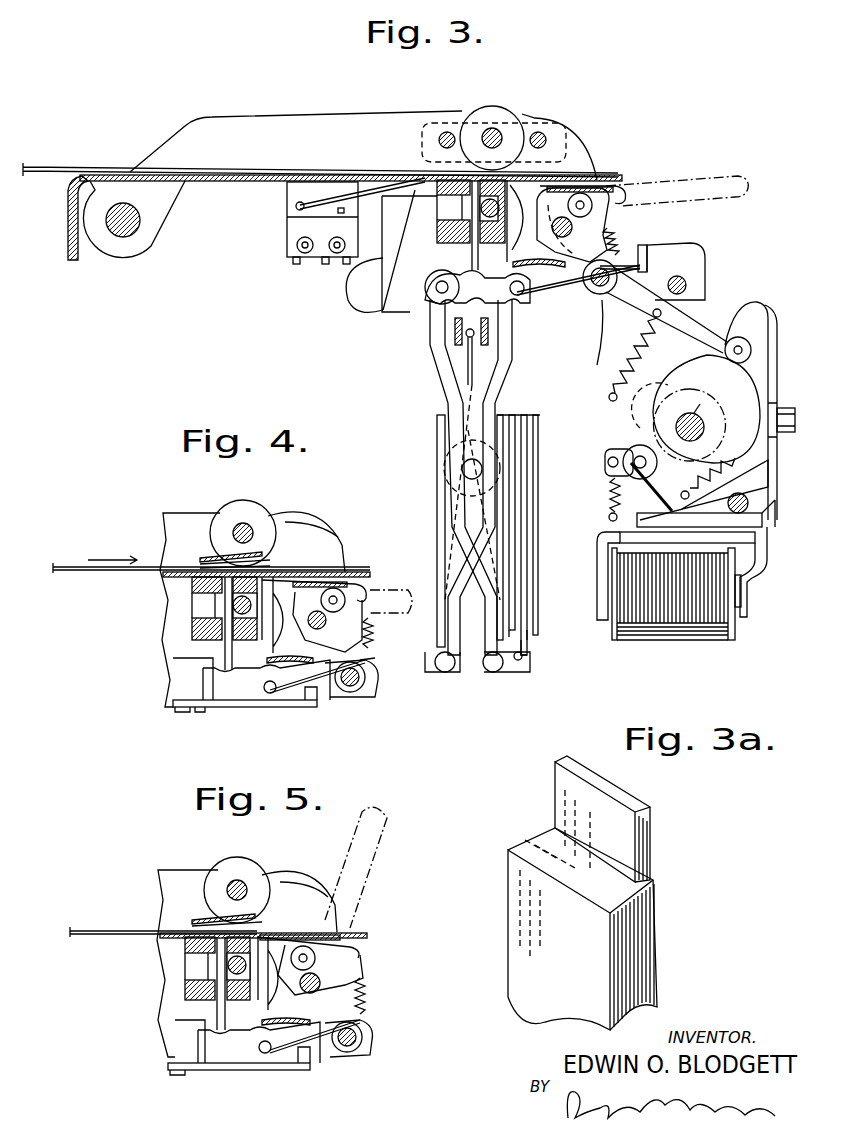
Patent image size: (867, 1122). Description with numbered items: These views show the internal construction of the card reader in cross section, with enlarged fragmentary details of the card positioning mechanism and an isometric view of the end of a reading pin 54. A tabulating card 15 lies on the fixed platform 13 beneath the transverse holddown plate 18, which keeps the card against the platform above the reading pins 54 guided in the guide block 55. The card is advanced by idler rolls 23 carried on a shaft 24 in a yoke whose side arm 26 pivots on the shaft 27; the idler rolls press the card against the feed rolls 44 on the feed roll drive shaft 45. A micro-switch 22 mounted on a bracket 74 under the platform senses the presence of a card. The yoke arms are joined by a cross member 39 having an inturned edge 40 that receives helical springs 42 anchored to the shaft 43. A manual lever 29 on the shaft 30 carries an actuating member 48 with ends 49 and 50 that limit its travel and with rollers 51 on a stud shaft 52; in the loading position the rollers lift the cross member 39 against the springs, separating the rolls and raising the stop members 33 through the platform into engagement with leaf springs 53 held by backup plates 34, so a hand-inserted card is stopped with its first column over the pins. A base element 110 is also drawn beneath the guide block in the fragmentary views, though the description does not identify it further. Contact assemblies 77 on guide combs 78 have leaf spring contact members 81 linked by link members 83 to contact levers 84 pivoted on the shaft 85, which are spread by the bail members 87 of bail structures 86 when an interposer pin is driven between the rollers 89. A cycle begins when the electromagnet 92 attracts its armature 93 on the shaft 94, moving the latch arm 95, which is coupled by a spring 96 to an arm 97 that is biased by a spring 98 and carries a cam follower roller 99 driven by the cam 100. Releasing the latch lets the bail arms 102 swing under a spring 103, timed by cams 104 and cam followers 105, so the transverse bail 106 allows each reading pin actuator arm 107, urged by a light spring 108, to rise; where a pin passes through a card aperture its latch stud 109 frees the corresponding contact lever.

In FIG. 3, the platform 13 is at (213, 181).
In FIG. 4, the platform 13 is at (365, 572).
In FIG. 5, the platform 13 is at (263, 936).
In FIG. 3, the tabulating card 15 is at (48, 164).
In FIG. 4, the tabulating card 15 is at (75, 562).
In FIG. 5, the tabulating card 15 is at (90, 926).
In FIG. 4, the transverse holddown plate 18 is at (165, 545).
In FIG. 5, the transverse holddown plate 18 is at (162, 903).
In FIG. 3, the electrical switch 22 is at (319, 253).
In FIG. 3, the idler rolls 23 is at (486, 106).
In FIG. 4, the idler rolls 23 is at (253, 505).
In FIG. 5, the idler rolls 23 is at (238, 858).
In FIG. 3, the shaft 24 is at (497, 130).
In FIG. 4, the shaft 24 is at (240, 523).
In FIG. 5, the shaft 24 is at (245, 883).
In FIG. 3, the yoke side arm 26 is at (250, 128).
In FIG. 4, the yoke side arm 26 is at (175, 520).
In FIG. 5, the yoke side arm 26 is at (185, 875).
In FIG. 3, the shaft 27 is at (120, 236).
In FIG. 3, the lever 29 is at (728, 170).
In FIG. 4, the lever 29 is at (403, 614).
In FIG. 5, the lever 29 is at (390, 853).
In FIG. 3, the shaft 30 is at (574, 228).
In FIG. 4, the shaft 30 is at (310, 628).
In FIG. 5, the shaft 30 is at (322, 985).
In FIG. 4, the stop members 33 is at (322, 535).
In FIG. 5, the stop members 33 is at (285, 925).
In FIG. 4, the backup plates 34 is at (270, 530).
In FIG. 5, the backup plates 34 is at (270, 893).
In FIG. 3, the cross member 39 is at (573, 192).
In FIG. 4, the cross member 39 is at (341, 556).
In FIG. 5, the cross member 39 is at (340, 925).
In FIG. 3, the inturned edge 40 is at (607, 193).
In FIG. 4, the inturned edge 40 is at (327, 622).
In FIG. 5, the inturned edge 40 is at (360, 952).
In FIG. 3, the helical springs 42 is at (647, 257).
In FIG. 4, the helical springs 42 is at (372, 655).
In FIG. 5, the helical springs 42 is at (365, 1020).
In FIG. 3, the shaft 43 is at (603, 290).
In FIG. 4, the shaft 43 is at (360, 685).
In FIG. 5, the shaft 43 is at (358, 1040).
In FIG. 3, the feed rolls 44 is at (520, 225).
In FIG. 4, the feed rolls 44 is at (268, 605).
In FIG. 3, the feed roll drive shaft 45 is at (490, 246).
In FIG. 4, the feed roll drive shaft 45 is at (235, 605).
In FIG. 3, the actuating member 48 is at (617, 232).
In FIG. 4, the actuating member 48 is at (325, 685).
In FIG. 5, the actuating member 48 is at (368, 992).
In FIG. 3, the end of actuating member 49 is at (572, 185).
In FIG. 5, the end of actuating member 49 is at (286, 1011).
In FIG. 3, the end of actuating member 50 is at (660, 240).
In FIG. 4, the end of actuating member 50 is at (366, 670).
In FIG. 5, the end of actuating member 50 is at (345, 980).
In FIG. 3, the rollers 51 is at (588, 193).
In FIG. 4, the rollers 51 is at (334, 612).
In FIG. 5, the rollers 51 is at (315, 960).
In FIG. 3, the stud shaft 52 is at (582, 202).
In FIG. 4, the stud shaft 52 is at (366, 592).
In FIG. 5, the stud shaft 52 is at (300, 968).
In FIG. 4, the leaf springs 53 is at (275, 553).
In FIG. 5, the leaf springs 53 is at (250, 922).
In FIG. 3, the reading pins 54 is at (437, 200).
In FIG. 4, the reading pins 54 is at (192, 630).
In FIG. 5, the reading pins 54 is at (217, 1012).
In FIG. 3A, the reading pins 54 is at (647, 937).
In FIG. 3, the guide block 55 is at (437, 228).
In FIG. 4, the guide block 55 is at (192, 640).
In FIG. 5, the guide block 55 is at (185, 990).
In FIG. 3, the bracket 74 is at (290, 192).
In FIG. 3, the contact assemblies 77 is at (533, 600).
In FIG. 3, the guide combs 78 is at (437, 525).
In FIG. 3, the leaf spring contact members 81 is at (527, 643).
In FIG. 3, the link members 83 is at (532, 683).
In FIG. 3, the contact levers 84 is at (470, 675).
In FIG. 3, the shaft 85 is at (462, 467).
In FIG. 3, the bail structures 86 is at (430, 368).
In FIG. 3, the bail members 87 is at (435, 312).
In FIG. 3, the rollers 89 is at (380, 295).
In FIG. 3, the electromagnet 92 is at (682, 633).
In FIG. 3, the armature 93 is at (760, 557).
In FIG. 3, the shaft 94 is at (750, 498).
In FIG. 3, the latch arm 95 is at (778, 322).
In FIG. 3, the spring 96 is at (733, 473).
In FIG. 3, the arm 97 is at (667, 490).
In FIG. 3, the spring 98 is at (610, 487).
In FIG. 3, the cam follower roller 99 is at (637, 445).
In FIG. 3, the cam 100 is at (661, 422).
In FIG. 3, the bail arms 102 is at (710, 313).
In FIG. 3, the spring 103 is at (628, 359).
In FIG. 3, the cams 104 is at (682, 370).
In FIG. 3, the cam followers 105 is at (753, 305).
In FIG. 3, the transverse bail 106 is at (578, 281).
In FIG. 4, the transverse bail 106 is at (283, 700).
In FIG. 5, the transverse bail 106 is at (315, 1036).
In FIG. 3, the reading pin actuator arm 107 is at (598, 300).
In FIG. 4, the reading pin actuator arm 107 is at (337, 690).
In FIG. 5, the reading pin actuator arm 107 is at (335, 1055).
In FIG. 3, the spring 108 is at (600, 320).
In FIG. 3, the latch stud 109 is at (413, 313).
In FIG. 4, the latch stud 109 is at (290, 659).
In FIG. 4, the base plate 110 is at (240, 708).
In FIG. 5, the base plate 110 is at (242, 1068).